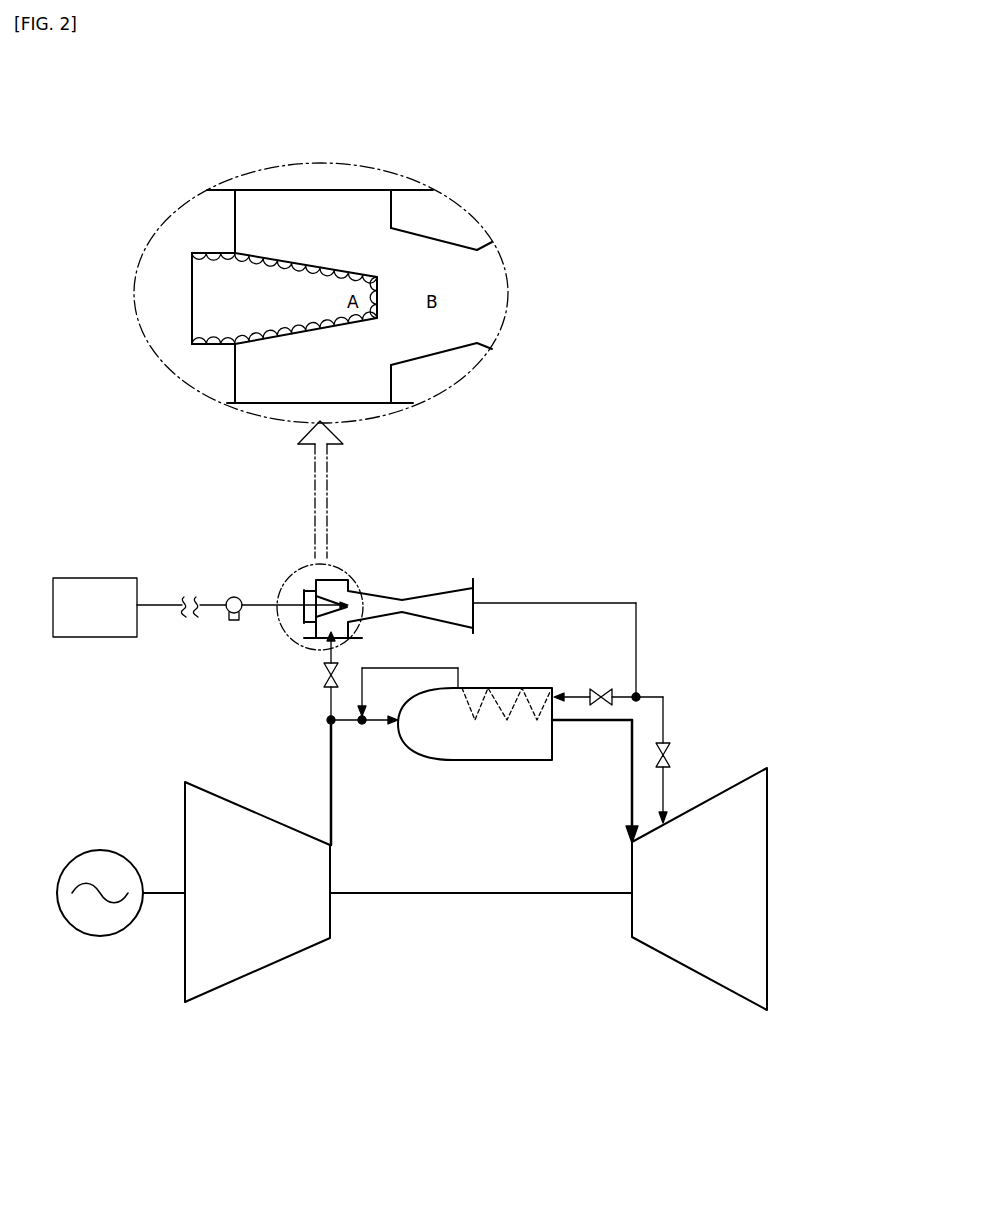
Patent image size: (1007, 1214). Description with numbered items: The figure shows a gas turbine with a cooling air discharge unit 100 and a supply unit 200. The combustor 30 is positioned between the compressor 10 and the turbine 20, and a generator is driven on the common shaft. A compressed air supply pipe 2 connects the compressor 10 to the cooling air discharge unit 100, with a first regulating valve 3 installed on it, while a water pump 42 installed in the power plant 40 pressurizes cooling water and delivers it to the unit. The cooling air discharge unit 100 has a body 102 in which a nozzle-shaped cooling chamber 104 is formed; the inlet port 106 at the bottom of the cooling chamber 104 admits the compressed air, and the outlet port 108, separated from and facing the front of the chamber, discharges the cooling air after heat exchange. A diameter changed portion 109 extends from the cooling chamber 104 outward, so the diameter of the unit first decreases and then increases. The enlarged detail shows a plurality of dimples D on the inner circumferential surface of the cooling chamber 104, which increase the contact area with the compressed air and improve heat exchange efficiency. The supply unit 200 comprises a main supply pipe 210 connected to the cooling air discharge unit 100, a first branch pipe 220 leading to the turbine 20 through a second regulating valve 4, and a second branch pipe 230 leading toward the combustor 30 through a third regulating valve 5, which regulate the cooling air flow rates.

The compressed air supply pipe 2 is at (328, 704).
The first regulating valve 3 is at (322, 668).
The second regulating valve 4 is at (672, 750).
The third regulating valve 5 is at (606, 685).
The compressor 10 is at (202, 866).
The turbine 20 is at (756, 856).
The combustor 30 is at (475, 789).
The power plant 40 is at (93, 637).
The water pump 42 is at (234, 597).
The cooling air discharge unit 100 is at (510, 520).
The body 102 is at (433, 238).
The cooling chamber 104 is at (283, 288).
The inlet port 106 is at (347, 404).
The outlet port 108 is at (475, 597).
The diameter changed portion 109 is at (403, 600).
The supply unit 200 is at (774, 475).
The main supply pipe 210 is at (637, 650).
The first branch pipe 220 is at (665, 720).
The second branch pipe 230 is at (568, 690).
The dimples D is at (205, 262).